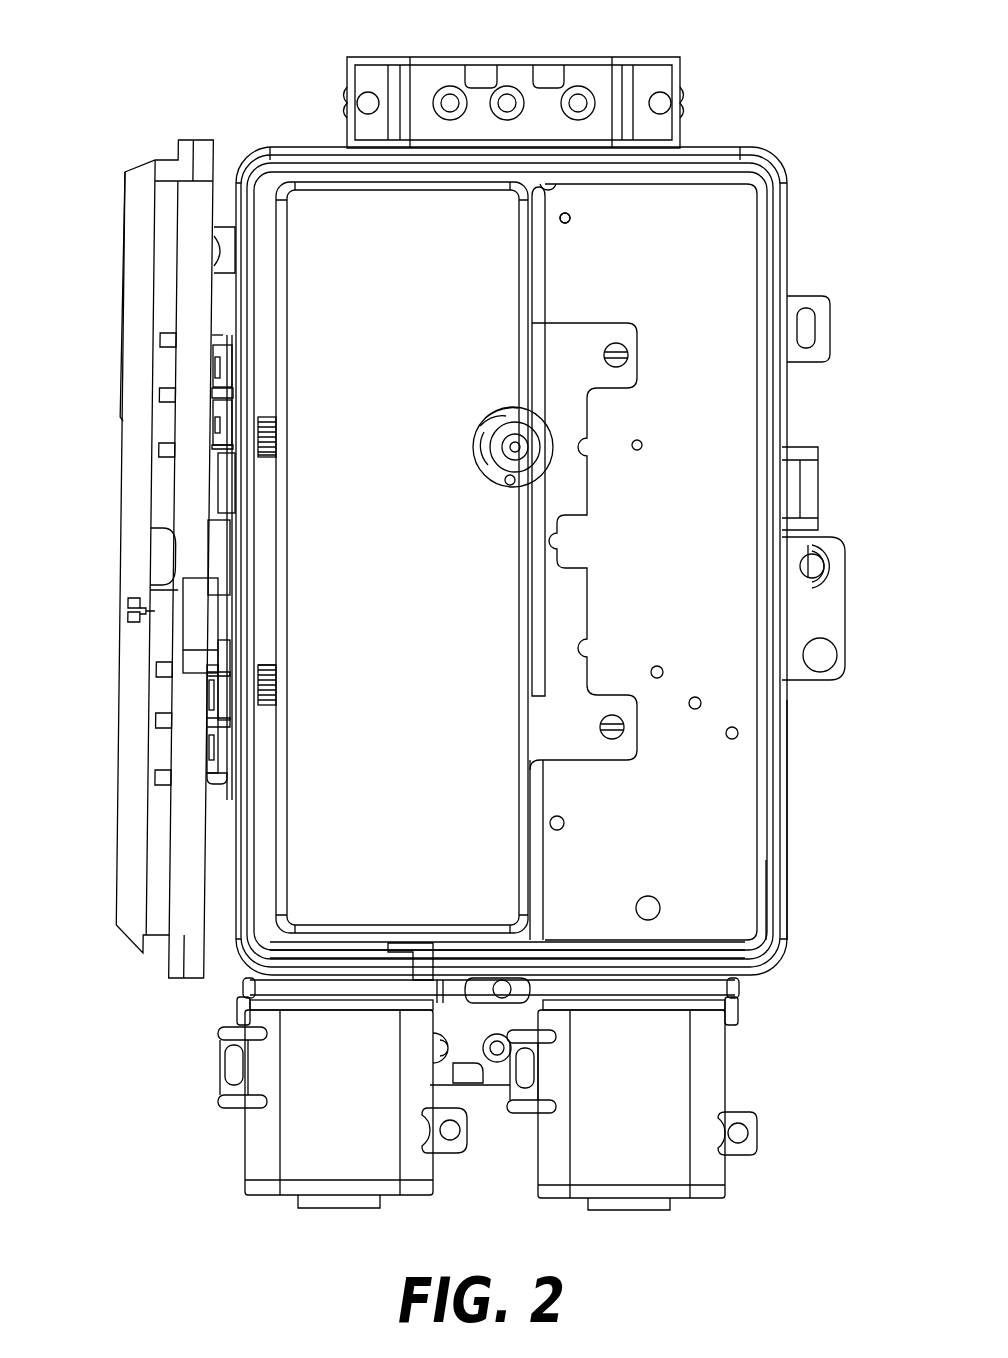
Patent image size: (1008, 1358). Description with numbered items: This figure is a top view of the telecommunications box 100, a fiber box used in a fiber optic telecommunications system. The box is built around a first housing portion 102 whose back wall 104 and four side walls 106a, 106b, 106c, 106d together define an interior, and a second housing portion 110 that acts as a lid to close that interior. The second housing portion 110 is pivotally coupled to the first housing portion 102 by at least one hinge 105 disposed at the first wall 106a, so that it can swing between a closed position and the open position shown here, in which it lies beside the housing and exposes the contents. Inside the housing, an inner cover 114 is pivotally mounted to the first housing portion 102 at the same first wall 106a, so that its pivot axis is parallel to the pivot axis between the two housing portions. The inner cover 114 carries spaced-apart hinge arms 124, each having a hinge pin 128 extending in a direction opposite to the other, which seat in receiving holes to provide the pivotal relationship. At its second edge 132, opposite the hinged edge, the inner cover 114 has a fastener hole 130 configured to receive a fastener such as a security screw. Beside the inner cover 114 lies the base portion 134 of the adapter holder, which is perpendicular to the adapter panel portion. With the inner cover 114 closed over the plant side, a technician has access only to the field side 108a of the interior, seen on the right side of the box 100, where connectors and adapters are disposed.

The telecommunications box 100 is at (176, 67).
The first housing portion 102 is at (787, 404).
The back wall 104 is at (676, 612).
The hinge 105 is at (223, 335).
The first wall 106a is at (232, 962).
The side wall 106b is at (745, 1000).
The side wall 106c is at (787, 762).
The side wall 106d is at (718, 148).
The field side 108a is at (718, 860).
The second housing portion 110 is at (116, 820).
The inner cover 114 is at (404, 562).
The hinge arms 124 is at (270, 453).
The hinge pin 128 is at (276, 424).
The fastener hole 130 is at (507, 463).
The second edge 132 is at (532, 258).
The base portion 134 is at (567, 342).